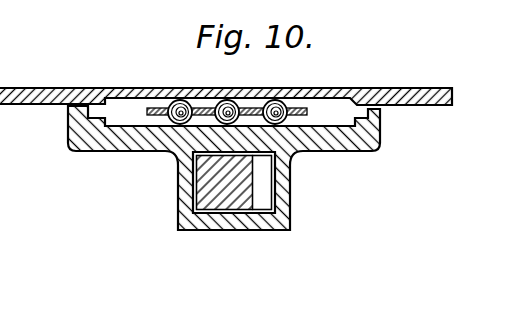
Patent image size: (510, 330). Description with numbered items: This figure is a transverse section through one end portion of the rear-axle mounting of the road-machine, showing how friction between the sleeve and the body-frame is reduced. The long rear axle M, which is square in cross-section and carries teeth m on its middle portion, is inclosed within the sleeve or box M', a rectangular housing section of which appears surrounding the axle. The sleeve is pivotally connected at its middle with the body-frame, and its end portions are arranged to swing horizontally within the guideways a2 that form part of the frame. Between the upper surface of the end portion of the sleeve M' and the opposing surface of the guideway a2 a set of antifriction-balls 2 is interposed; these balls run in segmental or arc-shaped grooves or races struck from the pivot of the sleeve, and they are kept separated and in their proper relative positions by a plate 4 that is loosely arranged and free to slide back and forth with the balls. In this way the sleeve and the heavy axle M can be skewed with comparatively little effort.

The guideway a2 is at (36, 100).
The antifriction-balls 2 is at (150, 88).
The plate 4 is at (160, 108).
The housing h is at (300, 151).
The rear axle M is at (219, 215).
The sleeve or box M' is at (156, 197).
The teeth m is at (267, 197).